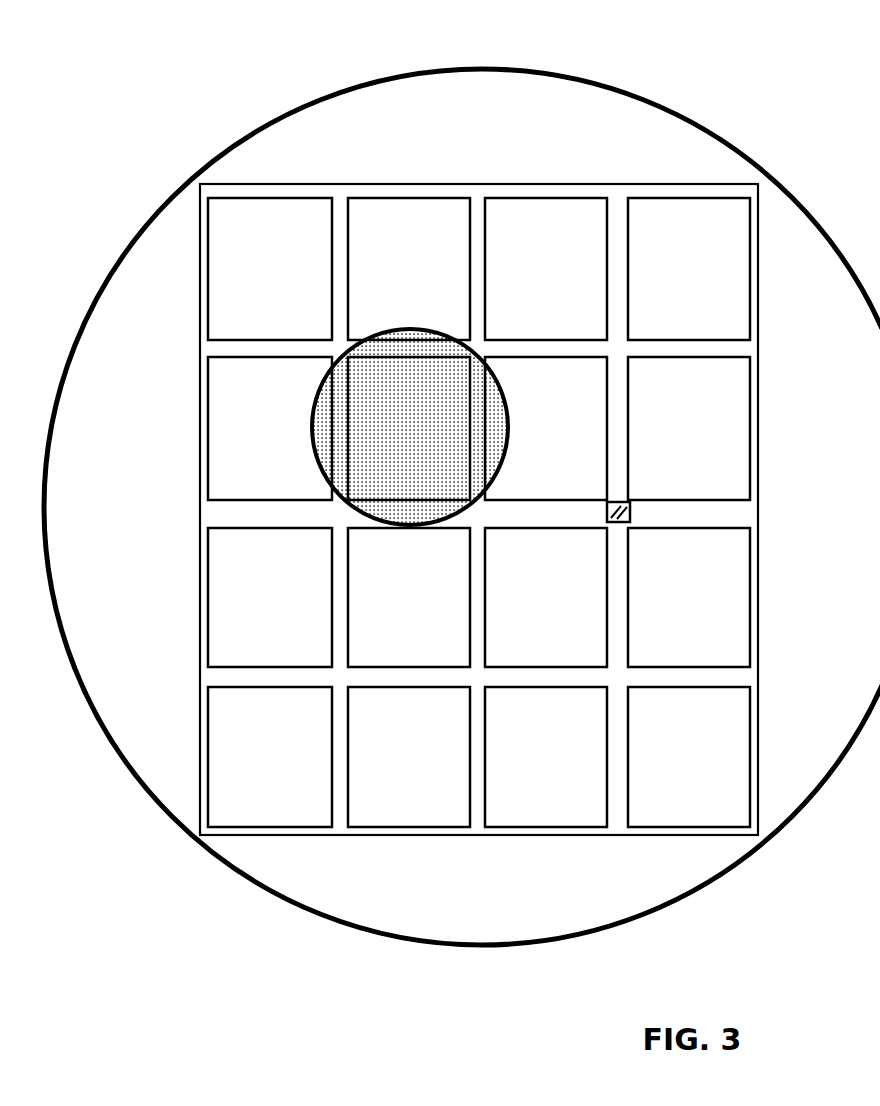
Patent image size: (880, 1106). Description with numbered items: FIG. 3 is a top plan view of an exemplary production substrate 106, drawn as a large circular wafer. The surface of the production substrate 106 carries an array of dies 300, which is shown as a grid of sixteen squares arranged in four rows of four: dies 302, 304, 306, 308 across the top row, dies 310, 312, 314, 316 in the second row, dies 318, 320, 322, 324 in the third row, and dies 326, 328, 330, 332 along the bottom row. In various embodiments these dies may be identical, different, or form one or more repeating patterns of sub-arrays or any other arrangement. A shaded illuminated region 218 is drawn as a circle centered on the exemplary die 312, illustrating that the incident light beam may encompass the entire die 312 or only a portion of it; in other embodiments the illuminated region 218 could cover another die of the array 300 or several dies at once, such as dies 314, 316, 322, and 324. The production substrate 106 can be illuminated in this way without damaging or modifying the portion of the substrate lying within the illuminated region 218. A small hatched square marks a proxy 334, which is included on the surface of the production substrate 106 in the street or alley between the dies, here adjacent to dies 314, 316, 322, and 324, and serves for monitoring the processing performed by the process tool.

The production substrate 106 is at (663, 130).
The array of dies 300 is at (486, 140).
The illuminated region 218 is at (313, 428).
The proxy 334 is at (633, 510).
The die 302 is at (249, 294).
The die 304 is at (388, 294).
The die 306 is at (525, 294).
The die 308 is at (668, 294).
The die 310 is at (249, 454).
The die 312 is at (388, 454).
The die 314 is at (525, 454).
The die 316 is at (668, 454).
The die 318 is at (249, 622).
The die 320 is at (388, 622).
The die 322 is at (525, 622).
The die 324 is at (668, 622).
The die 326 is at (249, 782).
The die 328 is at (388, 782).
The die 330 is at (525, 782).
The die 332 is at (668, 782).